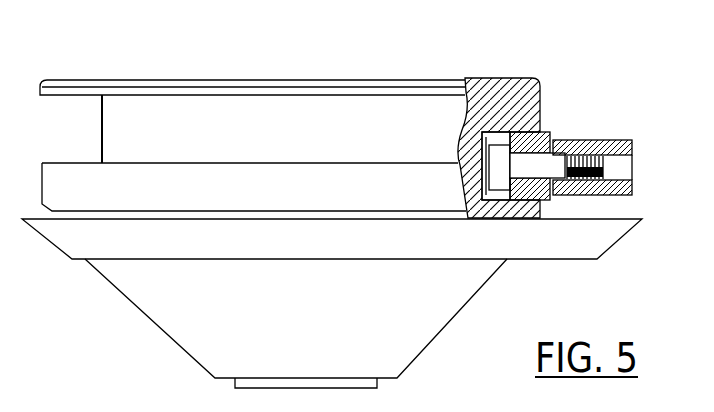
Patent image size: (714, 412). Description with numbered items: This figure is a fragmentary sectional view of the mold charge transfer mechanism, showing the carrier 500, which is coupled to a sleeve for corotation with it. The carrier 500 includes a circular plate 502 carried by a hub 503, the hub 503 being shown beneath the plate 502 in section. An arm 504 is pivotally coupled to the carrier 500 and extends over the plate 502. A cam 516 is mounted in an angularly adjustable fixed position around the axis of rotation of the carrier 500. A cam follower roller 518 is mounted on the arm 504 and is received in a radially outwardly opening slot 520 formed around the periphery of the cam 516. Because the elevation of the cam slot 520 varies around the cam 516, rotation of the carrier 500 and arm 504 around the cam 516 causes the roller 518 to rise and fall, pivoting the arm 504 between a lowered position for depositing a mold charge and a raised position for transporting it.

The carrier 500 is at (332, 303).
The circular plate 502 is at (577, 252).
The hub 503 is at (463, 312).
The arm 504 is at (605, 140).
The cam 516 is at (490, 77).
The cam follower roller 518 is at (543, 136).
The cam slot 520 is at (473, 145).